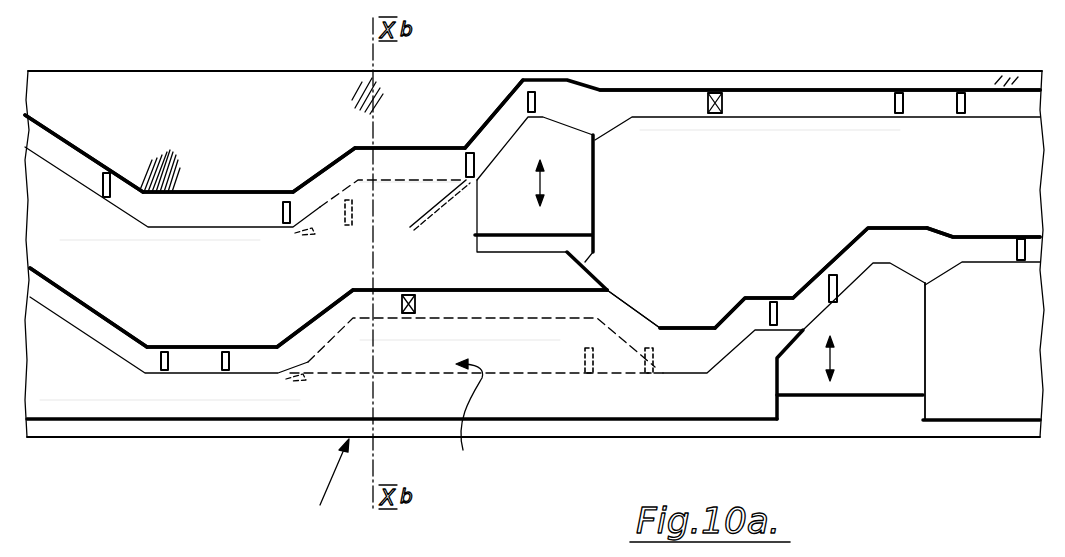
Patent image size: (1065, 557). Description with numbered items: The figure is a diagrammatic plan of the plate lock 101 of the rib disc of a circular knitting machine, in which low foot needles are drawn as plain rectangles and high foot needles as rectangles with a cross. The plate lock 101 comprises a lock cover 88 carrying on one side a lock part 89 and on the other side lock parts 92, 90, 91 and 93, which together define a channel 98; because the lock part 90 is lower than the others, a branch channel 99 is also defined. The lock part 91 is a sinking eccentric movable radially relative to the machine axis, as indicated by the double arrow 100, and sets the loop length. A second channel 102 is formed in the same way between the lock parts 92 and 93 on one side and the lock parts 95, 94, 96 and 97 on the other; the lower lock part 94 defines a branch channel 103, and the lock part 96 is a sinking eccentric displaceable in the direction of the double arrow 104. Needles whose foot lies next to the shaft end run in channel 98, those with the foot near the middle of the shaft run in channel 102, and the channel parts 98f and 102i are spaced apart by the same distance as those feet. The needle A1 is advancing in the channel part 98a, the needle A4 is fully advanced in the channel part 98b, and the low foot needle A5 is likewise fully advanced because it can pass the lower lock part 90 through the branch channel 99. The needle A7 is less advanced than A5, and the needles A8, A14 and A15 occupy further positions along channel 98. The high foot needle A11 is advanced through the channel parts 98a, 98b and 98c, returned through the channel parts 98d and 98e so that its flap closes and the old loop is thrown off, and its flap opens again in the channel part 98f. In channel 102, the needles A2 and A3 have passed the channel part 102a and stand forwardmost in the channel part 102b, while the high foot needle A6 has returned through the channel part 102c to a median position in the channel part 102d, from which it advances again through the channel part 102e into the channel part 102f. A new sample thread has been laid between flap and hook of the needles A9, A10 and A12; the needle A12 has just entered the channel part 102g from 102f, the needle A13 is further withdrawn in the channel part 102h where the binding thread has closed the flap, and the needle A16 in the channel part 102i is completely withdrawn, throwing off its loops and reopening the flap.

The lock cover 88 is at (684, 436).
The lock part 89 is at (236, 88).
The lock part 90 is at (411, 207).
The lock part (sinking eccentric) 91 is at (560, 138).
The lock part 92 is at (160, 288).
The lock part 93 is at (722, 155).
The lock part 94 is at (454, 355).
The lock part 95 is at (93, 403).
The lock part (sinking eccentric) 96 is at (890, 380).
The lock part 97 is at (980, 403).
The channel 98 is at (170, 213).
The channel part 98a is at (62, 146).
The channel part 98b is at (247, 204).
The channel part 98c is at (323, 180).
The channel part 98d is at (412, 160).
The channel part 98e is at (497, 115).
The channel part 98f is at (790, 100).
The branch channel 99 is at (388, 218).
The double arrow 100 is at (542, 185).
The plate lock 101 is at (322, 485).
The second channel 102 is at (241, 366).
The channel part 102a is at (71, 305).
The channel part 102b is at (191, 357).
The channel part 102c is at (318, 328).
The channel part 102d is at (473, 301).
The channel part 102e is at (630, 306).
The channel part 102f is at (684, 346).
The channel part 102g is at (787, 298).
The channel part 102h is at (847, 254).
The channel part 102i is at (985, 238).
The branch channel 103 is at (479, 417).
The double arrow 104 is at (823, 357).
The needle A1 is at (113, 172).
The needle A2 is at (165, 374).
The needle A3 is at (226, 374).
The needle A4 is at (284, 218).
The needle A5 is at (345, 226).
The high foot needle A6 is at (408, 294).
The needle A7 is at (467, 164).
The needle A8 is at (538, 92).
The needle A9 is at (588, 366).
The needle A10 is at (641, 366).
The high foot needle A11 is at (713, 92).
The needle A12 is at (766, 312).
The needle A13 is at (838, 292).
The needle A14 is at (893, 97).
The needle A15 is at (957, 98).
The needle A16 is at (1012, 250).